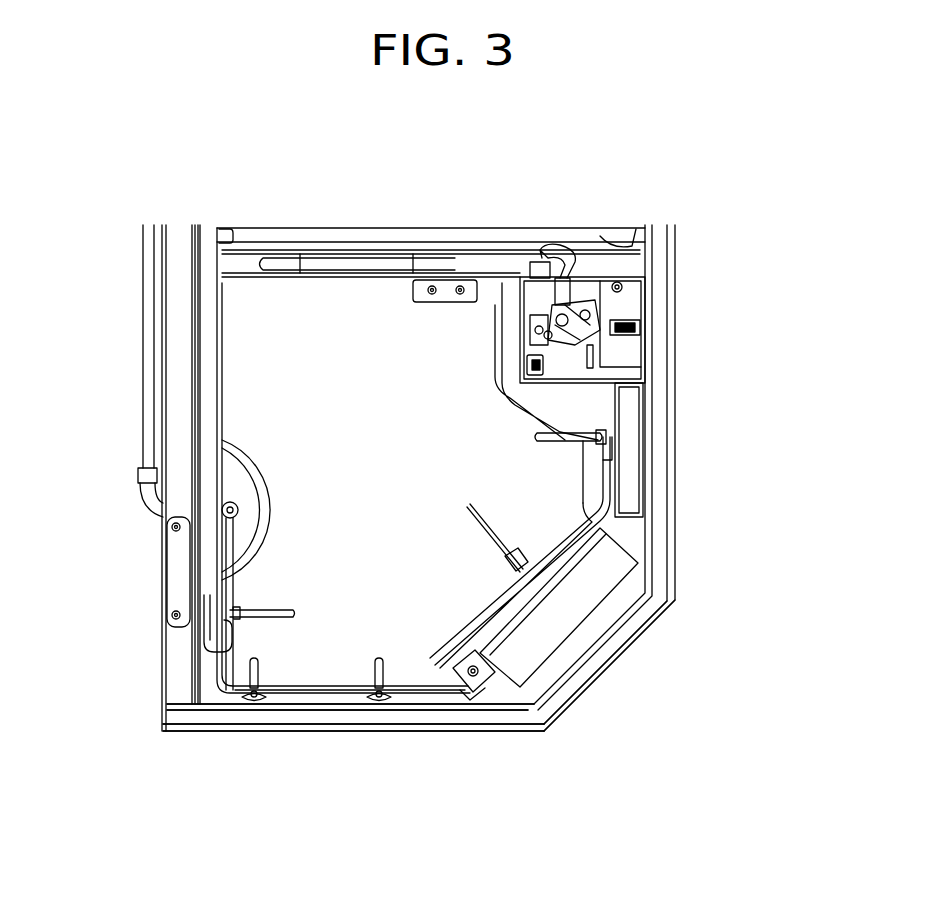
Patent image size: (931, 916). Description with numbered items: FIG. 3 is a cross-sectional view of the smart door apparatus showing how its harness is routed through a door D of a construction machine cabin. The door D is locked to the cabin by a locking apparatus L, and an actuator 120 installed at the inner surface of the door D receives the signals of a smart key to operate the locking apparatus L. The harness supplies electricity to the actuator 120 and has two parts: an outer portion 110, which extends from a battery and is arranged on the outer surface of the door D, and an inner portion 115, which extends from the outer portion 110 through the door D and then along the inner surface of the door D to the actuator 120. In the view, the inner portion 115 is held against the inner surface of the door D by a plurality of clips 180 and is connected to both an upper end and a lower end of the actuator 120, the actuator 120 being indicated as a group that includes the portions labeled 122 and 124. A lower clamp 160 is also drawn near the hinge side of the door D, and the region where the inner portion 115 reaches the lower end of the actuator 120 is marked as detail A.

The outer portion 110 is at (146, 313).
The door D is at (176, 401).
The inner portion 115 is at (330, 698).
The actuator 120 is at (757, 387).
The first frame portion 122 is at (642, 400).
The second frame portion (inclined housing) 124 is at (542, 630).
The locking apparatus L is at (585, 307).
The lower clamp 160 is at (243, 510).
The clips 180 is at (467, 507).
The hose connection region A is at (505, 690).